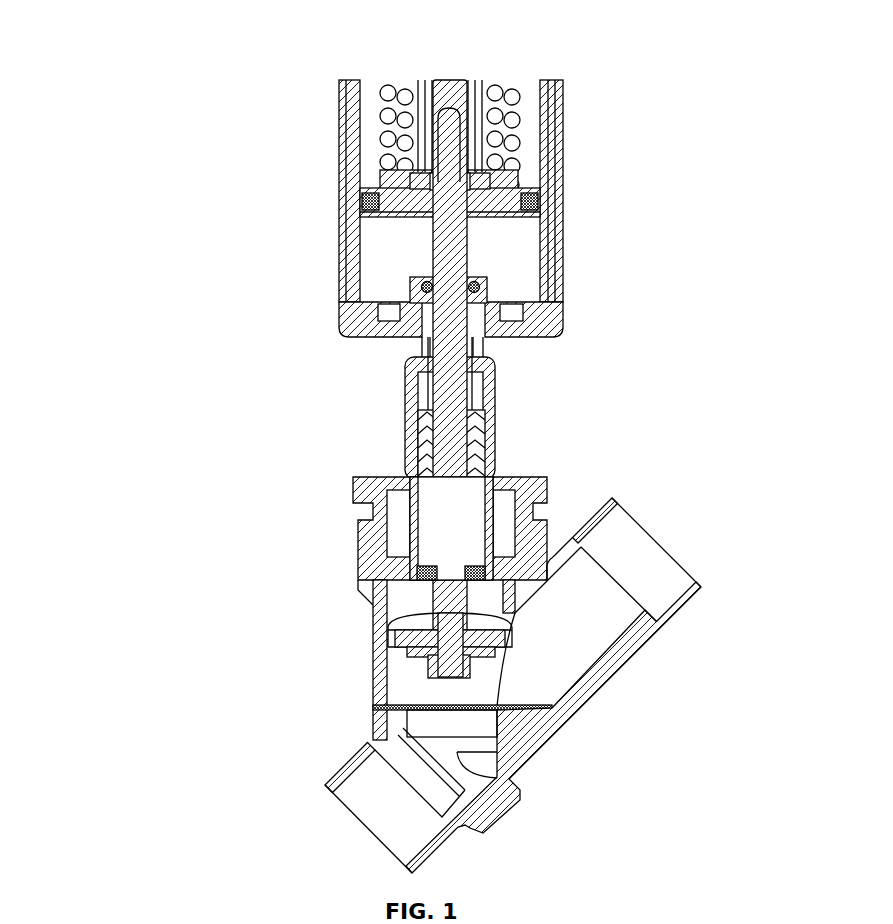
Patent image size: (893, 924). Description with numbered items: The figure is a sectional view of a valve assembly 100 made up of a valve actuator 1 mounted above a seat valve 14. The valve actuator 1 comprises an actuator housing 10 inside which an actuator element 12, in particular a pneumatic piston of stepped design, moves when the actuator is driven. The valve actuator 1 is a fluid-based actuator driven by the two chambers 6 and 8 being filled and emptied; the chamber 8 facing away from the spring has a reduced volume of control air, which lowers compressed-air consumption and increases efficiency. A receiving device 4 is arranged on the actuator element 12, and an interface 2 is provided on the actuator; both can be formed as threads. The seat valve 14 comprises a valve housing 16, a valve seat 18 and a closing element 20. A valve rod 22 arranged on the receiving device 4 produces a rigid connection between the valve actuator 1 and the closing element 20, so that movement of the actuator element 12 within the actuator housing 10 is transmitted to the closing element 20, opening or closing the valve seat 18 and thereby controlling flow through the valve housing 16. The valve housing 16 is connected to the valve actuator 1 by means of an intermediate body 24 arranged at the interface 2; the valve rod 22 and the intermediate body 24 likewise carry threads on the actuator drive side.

The valve assembly 100 is at (214, 72).
The valve actuator 1 is at (594, 74).
The interface 2 is at (412, 350).
The receiving device 4 is at (478, 150).
The chamber 6 is at (372, 134).
The chamber 8 is at (398, 250).
The actuator housing 10 is at (315, 218).
The actuator element 12 is at (546, 191).
The seat valve 14 is at (320, 606).
The valve housing 16 is at (520, 730).
The valve seat 18 is at (372, 712).
The closing element 20 is at (398, 643).
The valve rod 22 is at (456, 278).
The intermediate body 24 is at (490, 396).